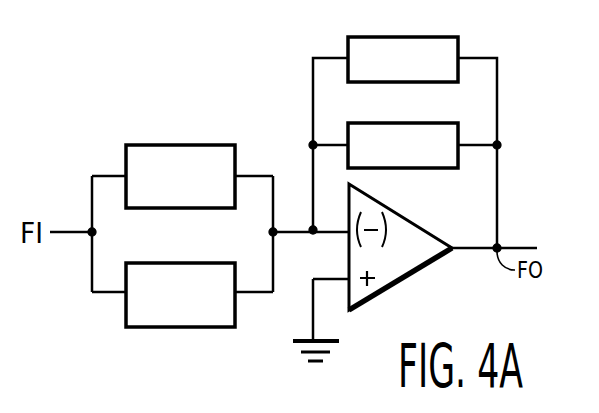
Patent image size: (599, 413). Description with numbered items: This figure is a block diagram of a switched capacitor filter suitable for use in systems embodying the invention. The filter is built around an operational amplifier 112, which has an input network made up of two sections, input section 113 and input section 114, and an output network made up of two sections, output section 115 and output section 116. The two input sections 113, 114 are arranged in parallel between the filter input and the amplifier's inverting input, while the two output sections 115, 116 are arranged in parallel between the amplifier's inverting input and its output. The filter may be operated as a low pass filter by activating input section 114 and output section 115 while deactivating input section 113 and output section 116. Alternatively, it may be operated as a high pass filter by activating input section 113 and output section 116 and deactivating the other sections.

The operational amplifier 112 is at (405, 278).
The input section 113 is at (170, 327).
The input section 114 is at (167, 145).
The output section 115 is at (398, 168).
The output section 116 is at (398, 82).